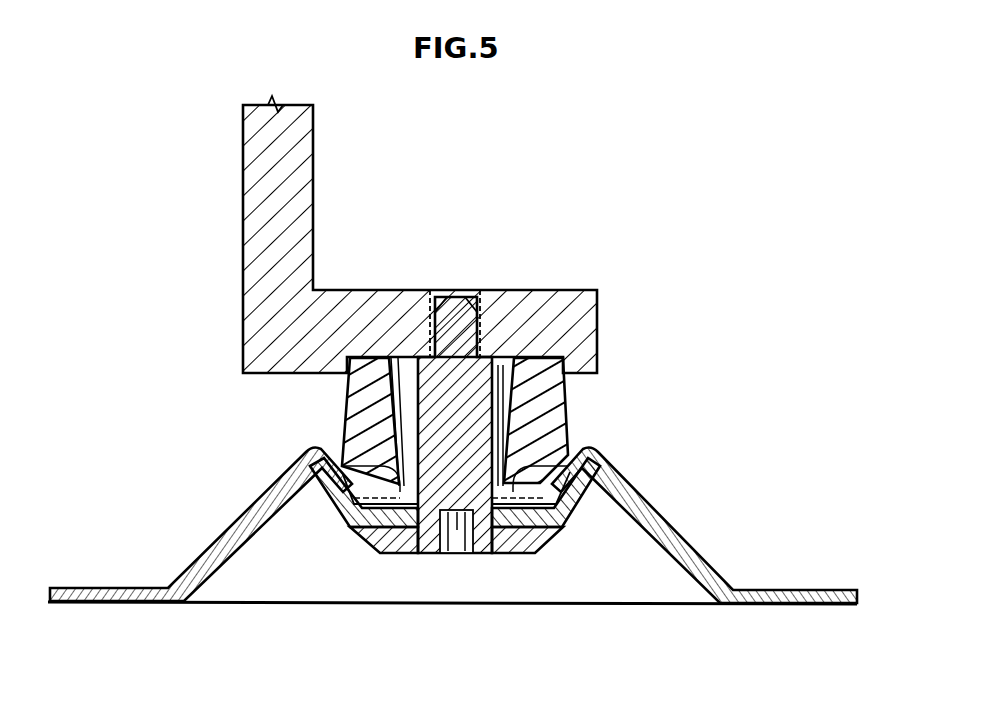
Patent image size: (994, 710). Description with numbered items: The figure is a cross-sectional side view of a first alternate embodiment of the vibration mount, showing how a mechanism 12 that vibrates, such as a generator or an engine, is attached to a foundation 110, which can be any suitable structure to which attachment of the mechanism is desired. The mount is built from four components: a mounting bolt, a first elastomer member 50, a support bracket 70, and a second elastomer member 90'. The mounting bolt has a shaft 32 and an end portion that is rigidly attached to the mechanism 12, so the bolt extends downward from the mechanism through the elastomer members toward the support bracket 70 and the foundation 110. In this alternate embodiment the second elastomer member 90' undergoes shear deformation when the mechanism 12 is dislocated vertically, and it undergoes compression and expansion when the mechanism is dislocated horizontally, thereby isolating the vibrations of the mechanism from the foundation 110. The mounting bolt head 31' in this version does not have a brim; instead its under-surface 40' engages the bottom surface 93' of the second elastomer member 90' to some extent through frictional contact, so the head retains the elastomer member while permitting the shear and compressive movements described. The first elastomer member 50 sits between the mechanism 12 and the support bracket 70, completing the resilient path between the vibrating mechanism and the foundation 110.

The mechanism 12 is at (243, 227).
The shaft 32 is at (493, 428).
The first elastomer member 50 is at (566, 387).
The under-surface 40' is at (436, 504).
The second elastomer member 90' is at (429, 510).
The mounting bolt head 31' is at (456, 589).
The bottom surface 93' is at (428, 580).
The support bracket 70 is at (672, 519).
The foundation 110 is at (214, 590).